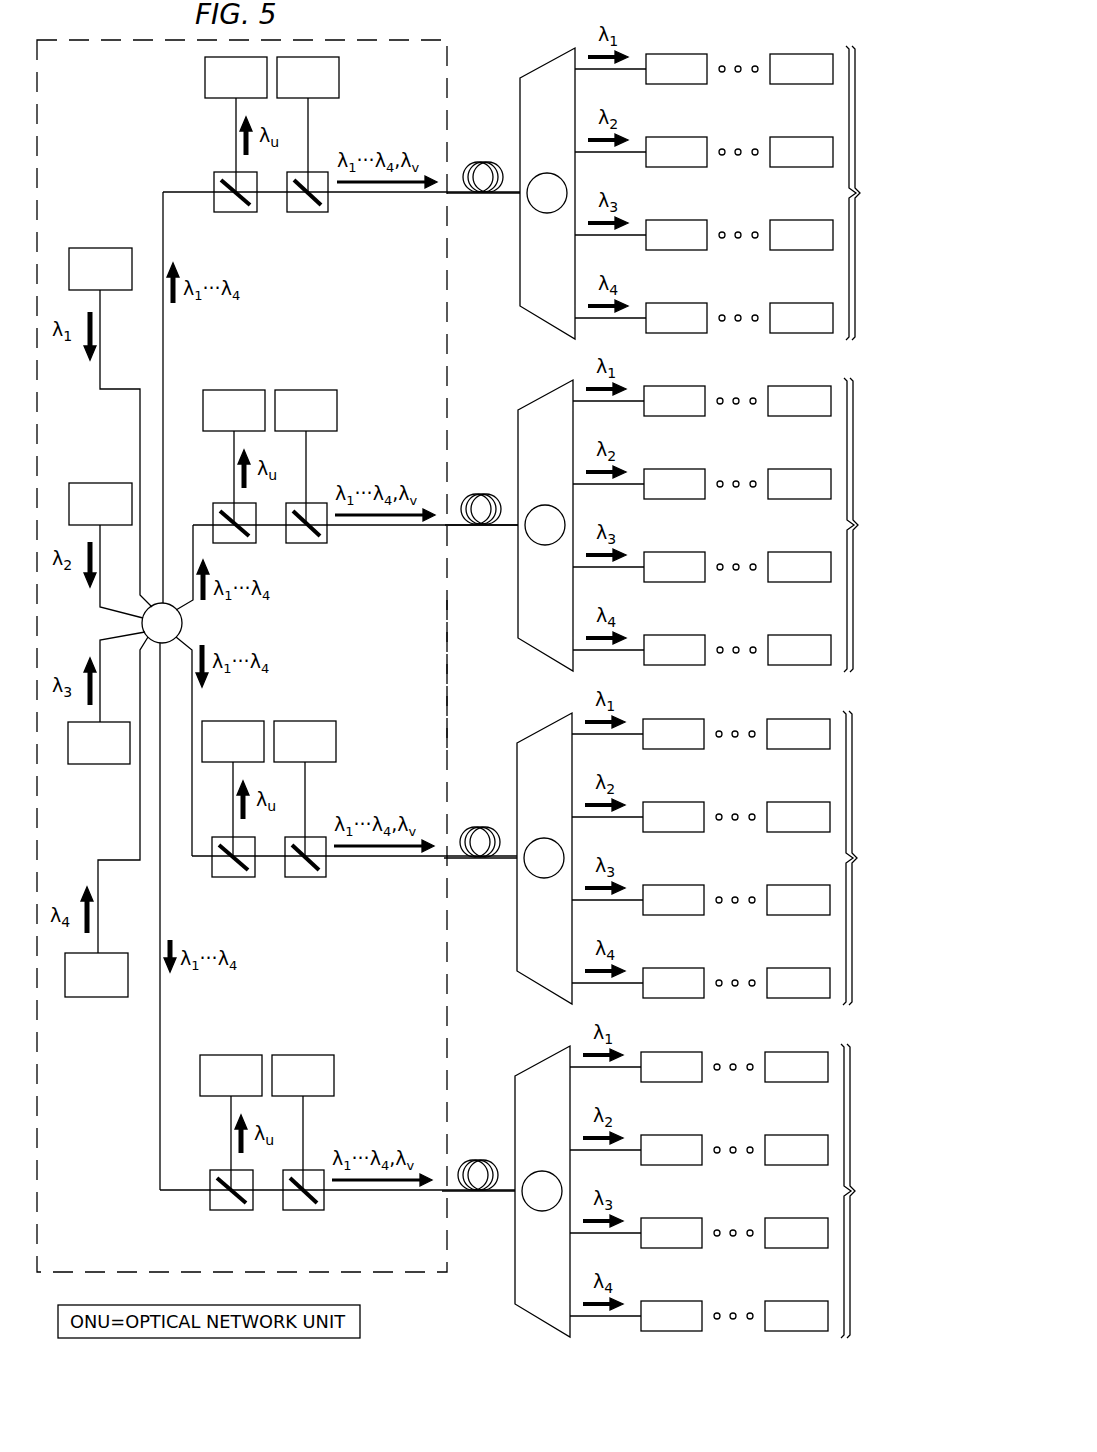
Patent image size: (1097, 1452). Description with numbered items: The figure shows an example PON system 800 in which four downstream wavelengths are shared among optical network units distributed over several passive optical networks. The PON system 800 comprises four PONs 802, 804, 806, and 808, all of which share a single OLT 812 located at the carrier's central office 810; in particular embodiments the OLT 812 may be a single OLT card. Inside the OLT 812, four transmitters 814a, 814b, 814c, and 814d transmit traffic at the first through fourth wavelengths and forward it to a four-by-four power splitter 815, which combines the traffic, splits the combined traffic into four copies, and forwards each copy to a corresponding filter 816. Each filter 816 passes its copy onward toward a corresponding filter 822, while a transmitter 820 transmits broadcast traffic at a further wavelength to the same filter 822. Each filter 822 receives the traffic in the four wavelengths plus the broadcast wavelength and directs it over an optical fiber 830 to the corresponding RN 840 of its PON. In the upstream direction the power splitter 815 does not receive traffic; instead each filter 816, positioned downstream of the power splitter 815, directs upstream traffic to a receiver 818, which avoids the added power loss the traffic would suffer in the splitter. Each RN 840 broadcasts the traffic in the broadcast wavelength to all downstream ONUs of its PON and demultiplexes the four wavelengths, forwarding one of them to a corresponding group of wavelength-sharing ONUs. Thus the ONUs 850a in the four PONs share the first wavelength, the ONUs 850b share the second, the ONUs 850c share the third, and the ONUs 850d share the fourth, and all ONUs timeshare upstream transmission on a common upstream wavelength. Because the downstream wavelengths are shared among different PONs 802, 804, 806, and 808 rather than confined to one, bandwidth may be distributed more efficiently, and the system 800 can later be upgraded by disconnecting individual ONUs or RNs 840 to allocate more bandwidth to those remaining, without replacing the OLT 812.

The PON system 800 is at (873, 58).
The PON 802 is at (874, 193).
The PON 804 is at (872, 525).
The PON 806 is at (871, 858).
The PON 808 is at (869, 1191).
The central office 810 is at (452, 363).
The OLT 812 is at (455, 675).
The transmitter 814a is at (102, 248).
The transmitter 814b is at (100, 483).
The transmitter 814c is at (98, 764).
The transmitter 814d is at (98, 997).
The power splitter 815 is at (182, 623).
The filter 816 is at (240, 212).
The receiver 818 is at (205, 78).
The transmitter 820 is at (339, 78).
The filter 822 is at (312, 212).
The optical fiber 830 is at (478, 160).
The RN 840 is at (520, 273).
The ONU 850a is at (673, 54).
The ONU 850b is at (744, 630).
The ONU 850c is at (744, 713).
The ONU 850d is at (744, 796).